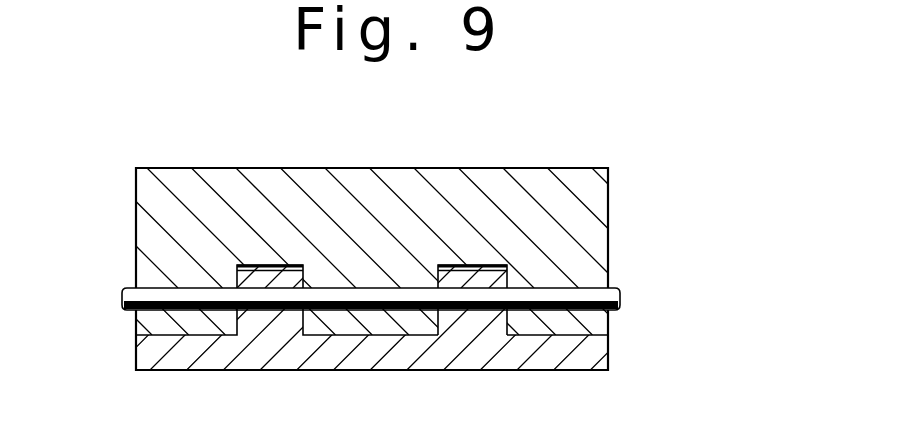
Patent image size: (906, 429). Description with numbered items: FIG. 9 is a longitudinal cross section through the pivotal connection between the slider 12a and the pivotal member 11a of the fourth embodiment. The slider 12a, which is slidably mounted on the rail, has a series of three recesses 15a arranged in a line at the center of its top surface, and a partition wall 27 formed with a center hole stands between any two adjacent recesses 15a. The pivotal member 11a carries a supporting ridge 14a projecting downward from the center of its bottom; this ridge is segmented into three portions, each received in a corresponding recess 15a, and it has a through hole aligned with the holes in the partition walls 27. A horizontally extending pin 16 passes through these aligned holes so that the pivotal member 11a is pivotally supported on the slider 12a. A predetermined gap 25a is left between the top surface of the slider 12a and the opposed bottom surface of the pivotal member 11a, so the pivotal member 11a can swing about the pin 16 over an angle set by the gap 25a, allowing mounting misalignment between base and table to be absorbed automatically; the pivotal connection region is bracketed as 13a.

The pivotal member 11a is at (153, 199).
The slider 12a is at (235, 348).
The laminate 13a is at (706, 192).
The supporting ridge 14a is at (425, 327).
The recesses 15a is at (410, 283).
The pin 16 is at (610, 295).
The gap 25a is at (265, 266).
The partition wall 27 is at (495, 320).